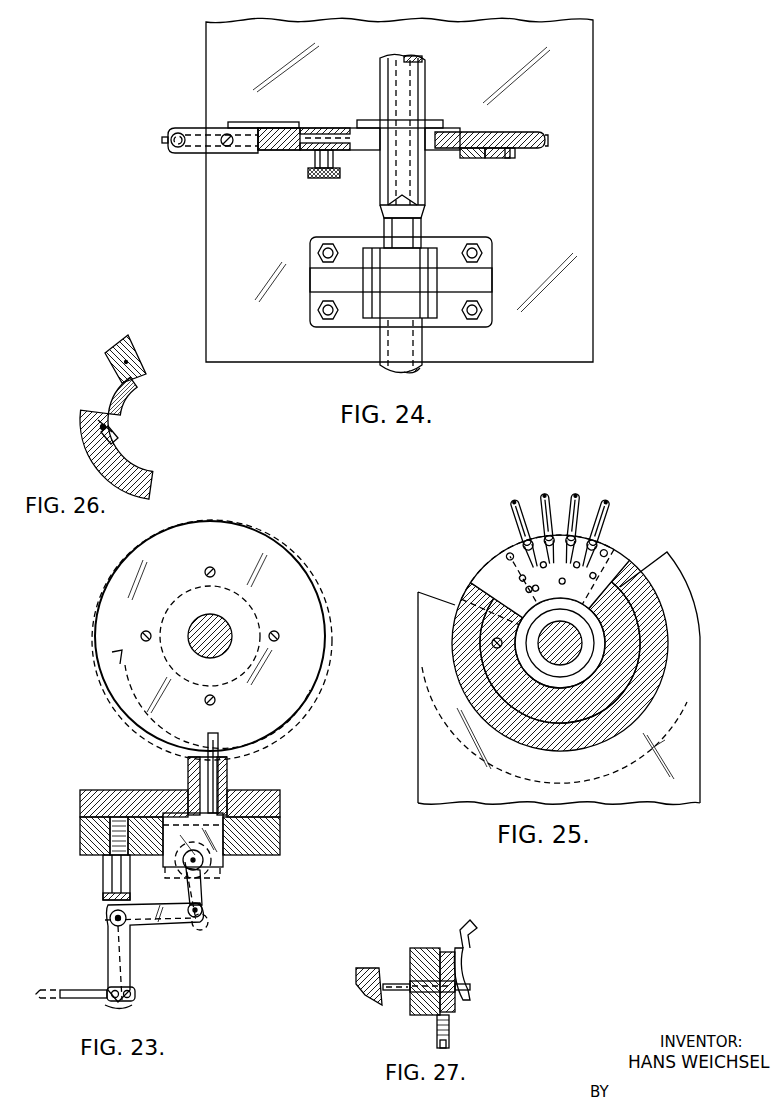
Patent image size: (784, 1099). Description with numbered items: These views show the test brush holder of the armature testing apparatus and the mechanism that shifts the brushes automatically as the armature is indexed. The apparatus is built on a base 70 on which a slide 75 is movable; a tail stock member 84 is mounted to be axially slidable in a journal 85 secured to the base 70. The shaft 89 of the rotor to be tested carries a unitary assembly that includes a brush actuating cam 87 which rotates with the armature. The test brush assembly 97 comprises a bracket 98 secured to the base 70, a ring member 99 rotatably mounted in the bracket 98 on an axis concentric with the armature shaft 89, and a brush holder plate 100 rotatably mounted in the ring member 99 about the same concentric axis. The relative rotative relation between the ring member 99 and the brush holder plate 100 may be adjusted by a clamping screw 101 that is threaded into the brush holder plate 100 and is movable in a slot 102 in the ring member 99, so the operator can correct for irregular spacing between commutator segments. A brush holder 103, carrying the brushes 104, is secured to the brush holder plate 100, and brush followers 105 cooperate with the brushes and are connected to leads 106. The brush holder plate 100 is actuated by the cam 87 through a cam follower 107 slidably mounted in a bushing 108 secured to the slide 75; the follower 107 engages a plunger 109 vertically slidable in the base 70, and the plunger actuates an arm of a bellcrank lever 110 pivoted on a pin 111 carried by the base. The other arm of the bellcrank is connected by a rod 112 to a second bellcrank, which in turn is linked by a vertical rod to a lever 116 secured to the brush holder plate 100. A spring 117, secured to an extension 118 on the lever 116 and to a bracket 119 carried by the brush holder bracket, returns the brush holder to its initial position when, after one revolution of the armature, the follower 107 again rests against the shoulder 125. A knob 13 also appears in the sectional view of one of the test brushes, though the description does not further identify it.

In FIG. 27, the knob 13 is at (368, 970).
In FIG. 24, the base 70 is at (577, 313).
In FIG. 23, the base 70 is at (287, 843).
In FIG. 23, the slide 75 is at (280, 806).
In FIG. 24, the tail stock member 84 is at (393, 342).
In FIG. 24, the journal 85 is at (480, 278).
In FIG. 23, the brush actuating cam 87 is at (248, 540).
In FIG. 24, the shaft 89 is at (410, 83).
In FIG. 23, the shaft 89 is at (230, 627).
In FIG. 25, the shaft 89 is at (543, 633).
In FIG. 24, the test brush assembly 97 is at (497, 133).
In FIG. 24, the bracket 98 is at (540, 132).
In FIG. 25, the bracket 98 is at (680, 598).
In FIG. 24, the ring member 99 is at (502, 153).
In FIG. 26, the ring member 99 is at (148, 483).
In FIG. 25, the ring member 99 is at (655, 637).
In FIG. 24, the brush holder plate 100 is at (450, 135).
In FIG. 26, the brush holder plate 100 is at (128, 353).
In FIG. 25, the brush holder plate 100 is at (620, 680).
In FIG. 27, the brush holder plate 100 is at (447, 1040).
In FIG. 24, the clamping screw 101 is at (320, 178).
In FIG. 26, the clamping screw 101 is at (100, 425).
In FIG. 25, the clamping screw 101 is at (490, 643).
In FIG. 26, the slot 102 is at (112, 440).
In FIG. 25, the brush holder 103 is at (627, 547).
In FIG. 27, the brush holder 103 is at (410, 1007).
In FIG. 25, the brushes 104 is at (518, 550).
In FIG. 27, the brushes 104 is at (392, 982).
In FIG. 25, the brush followers 105 is at (572, 500).
In FIG. 27, the brush followers 105 is at (468, 985).
In FIG. 27, the leads 106 is at (465, 928).
In FIG. 23, the cam follower 107 is at (222, 755).
In FIG. 23, the bushing 108 is at (230, 783).
In FIG. 23, the plunger 109 is at (227, 863).
In FIG. 23, the bellcrank lever 110 is at (163, 927).
In FIG. 23, the pin 111 is at (120, 882).
In FIG. 23, the rod 112 is at (85, 960).
In FIG. 24, the lever 116 is at (480, 158).
In FIG. 24, the spring 117 is at (187, 150).
In FIG. 24, the extension 118 is at (197, 132).
In FIG. 24, the bracket 119 is at (228, 123).
In FIG. 23, the shoulder 125 is at (120, 663).